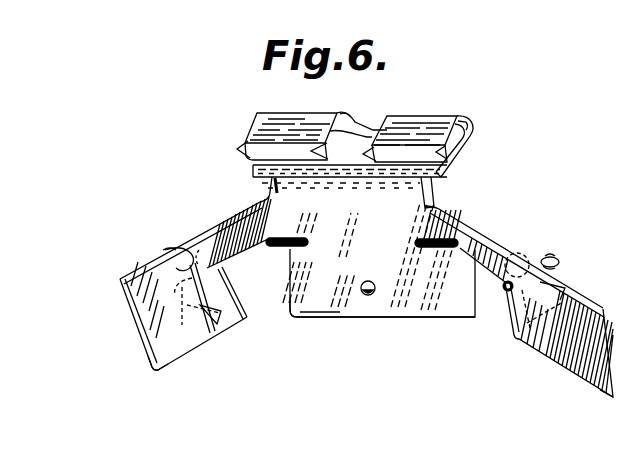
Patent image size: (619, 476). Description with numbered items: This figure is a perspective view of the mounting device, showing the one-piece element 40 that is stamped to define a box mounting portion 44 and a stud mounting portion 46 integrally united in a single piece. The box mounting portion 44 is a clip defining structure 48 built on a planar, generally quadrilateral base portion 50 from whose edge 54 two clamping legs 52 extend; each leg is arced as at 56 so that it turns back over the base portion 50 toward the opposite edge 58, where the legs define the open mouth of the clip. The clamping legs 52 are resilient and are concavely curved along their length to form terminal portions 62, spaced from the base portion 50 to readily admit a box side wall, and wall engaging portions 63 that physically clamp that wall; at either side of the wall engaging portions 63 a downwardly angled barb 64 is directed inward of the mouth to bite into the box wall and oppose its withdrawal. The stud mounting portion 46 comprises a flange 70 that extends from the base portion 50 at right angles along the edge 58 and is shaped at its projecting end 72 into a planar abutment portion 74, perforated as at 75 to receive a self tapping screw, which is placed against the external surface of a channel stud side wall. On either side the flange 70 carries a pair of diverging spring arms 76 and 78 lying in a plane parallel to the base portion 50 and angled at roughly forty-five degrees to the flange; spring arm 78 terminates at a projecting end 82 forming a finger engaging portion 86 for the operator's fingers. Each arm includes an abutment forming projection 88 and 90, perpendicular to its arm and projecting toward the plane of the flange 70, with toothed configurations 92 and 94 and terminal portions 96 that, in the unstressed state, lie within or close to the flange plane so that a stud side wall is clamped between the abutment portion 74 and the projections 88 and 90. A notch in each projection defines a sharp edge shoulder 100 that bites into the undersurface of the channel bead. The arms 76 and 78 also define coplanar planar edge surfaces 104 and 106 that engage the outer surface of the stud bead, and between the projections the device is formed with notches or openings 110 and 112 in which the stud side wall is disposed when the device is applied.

The one-piece element 40 is at (603, 398).
The box mounting portion 44 is at (270, 106).
The stud mounting portion 46 is at (160, 372).
The clip defining structure 48 is at (415, 111).
The base portion 50 is at (470, 138).
The clamping legs 52 is at (288, 132).
The edge of base 54 is at (363, 128).
The arced portion 56 is at (465, 150).
The edge of base 58 is at (332, 178).
The terminal portions 62 is at (306, 134).
The wall engaging portions 63 is at (348, 128).
The barb 64 is at (243, 148).
The flange 70 is at (434, 188).
The projecting end 72 is at (383, 312).
The abutment portion 74 is at (347, 318).
The perforation 75 is at (363, 297).
The spring arm 76 is at (493, 228).
The spring arm 78 is at (247, 206).
The projecting end 82 is at (142, 328).
The finger engaging portion 86 is at (143, 290).
The abutment forming projection 88 is at (530, 340).
The abutment forming projection 90 is at (208, 322).
The toothed configuration 92 is at (560, 260).
The toothed configuration 94 is at (193, 281).
The terminal portions 96 is at (165, 250).
The sharp edge shoulder 100 is at (207, 240).
The planar edge surface 104 is at (466, 258).
The planar edge surface 106 is at (270, 241).
The notch or opening 110 is at (495, 312).
The notch or opening 112 is at (292, 314).